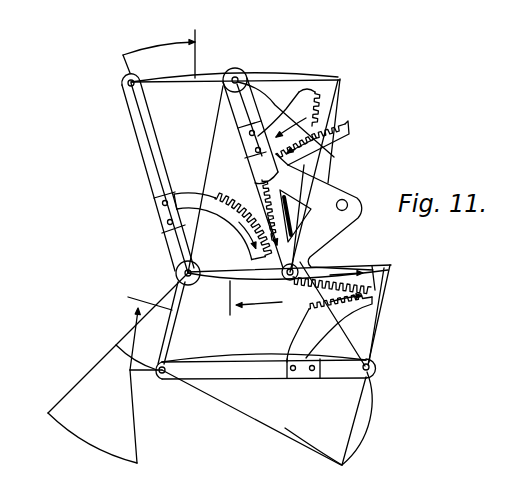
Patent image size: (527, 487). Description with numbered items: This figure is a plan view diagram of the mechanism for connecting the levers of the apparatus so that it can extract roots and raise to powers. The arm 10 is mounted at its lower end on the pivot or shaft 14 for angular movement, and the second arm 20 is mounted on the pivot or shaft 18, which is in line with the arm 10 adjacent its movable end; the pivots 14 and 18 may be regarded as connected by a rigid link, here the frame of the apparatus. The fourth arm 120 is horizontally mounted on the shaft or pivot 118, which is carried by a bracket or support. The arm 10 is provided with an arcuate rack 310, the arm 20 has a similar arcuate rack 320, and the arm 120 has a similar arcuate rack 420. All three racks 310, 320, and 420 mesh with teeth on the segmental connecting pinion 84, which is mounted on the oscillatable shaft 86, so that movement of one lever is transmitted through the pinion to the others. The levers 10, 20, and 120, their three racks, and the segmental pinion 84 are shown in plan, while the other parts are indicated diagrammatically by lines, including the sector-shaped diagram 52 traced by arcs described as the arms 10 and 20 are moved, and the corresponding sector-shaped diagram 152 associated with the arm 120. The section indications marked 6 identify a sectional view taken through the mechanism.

The section line 6- 6 is at (197, 193).
The arm 10 is at (139, 142).
The pivot or shaft 14 is at (176, 272).
The pivot or shaft 18 is at (240, 77).
The second arm 20 is at (250, 166).
The sector-shaped diagram 52 is at (333, 80).
The segmental connecting pinion 84 is at (346, 130).
The oscillatable shaft 86 is at (347, 202).
The shaft or pivot 118 is at (376, 371).
The fourth arm 120 is at (259, 362).
The sector-shaped diagram 152 is at (347, 447).
The arcuate rack 310 is at (206, 193).
The arcuate rack 320 is at (319, 100).
The arcuate rack 420 is at (375, 299).